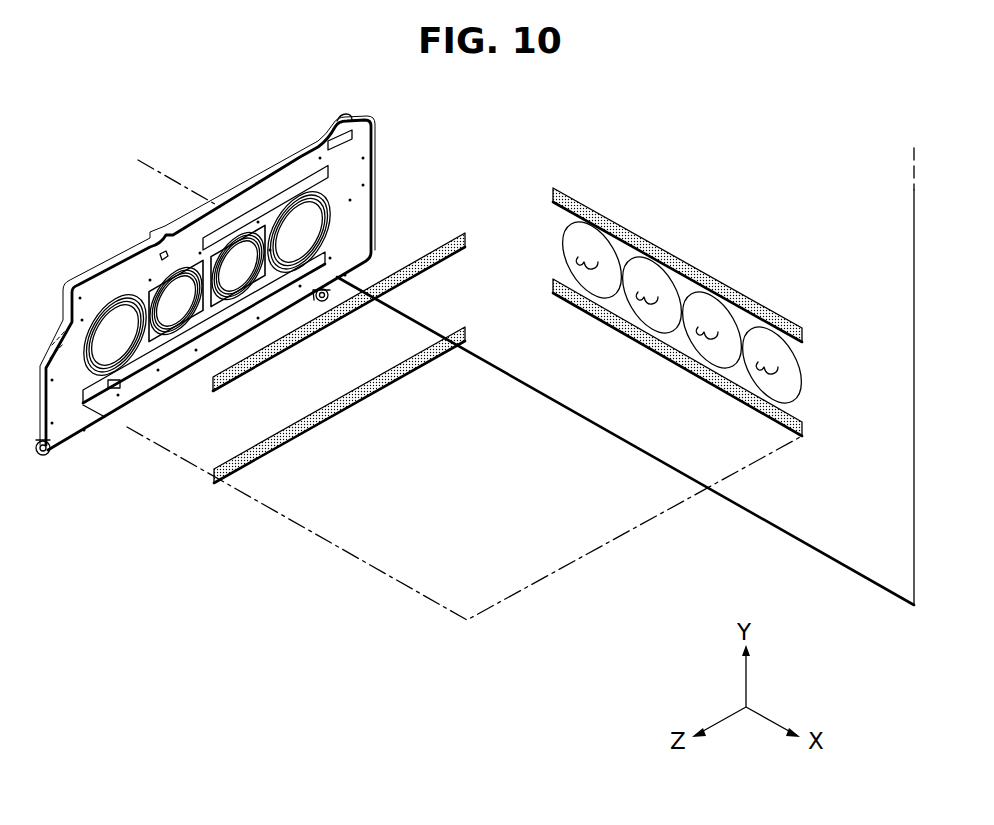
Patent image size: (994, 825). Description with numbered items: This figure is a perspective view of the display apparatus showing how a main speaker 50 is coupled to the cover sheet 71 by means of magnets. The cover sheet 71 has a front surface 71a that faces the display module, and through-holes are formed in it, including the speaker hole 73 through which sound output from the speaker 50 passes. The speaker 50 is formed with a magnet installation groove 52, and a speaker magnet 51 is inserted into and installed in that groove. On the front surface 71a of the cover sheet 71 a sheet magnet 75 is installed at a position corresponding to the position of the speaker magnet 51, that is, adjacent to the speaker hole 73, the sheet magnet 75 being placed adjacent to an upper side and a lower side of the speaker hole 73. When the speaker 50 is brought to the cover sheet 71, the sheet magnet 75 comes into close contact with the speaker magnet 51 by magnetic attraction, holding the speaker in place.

The speaker 50 is at (380, 168).
The speaker magnet 51 is at (238, 378).
The magnet installation groove 52 is at (164, 257).
The cover sheet 71 is at (754, 487).
The front surface 71a is at (844, 540).
The speaker hole 73 is at (647, 292).
The sheet magnet 75 is at (560, 189).